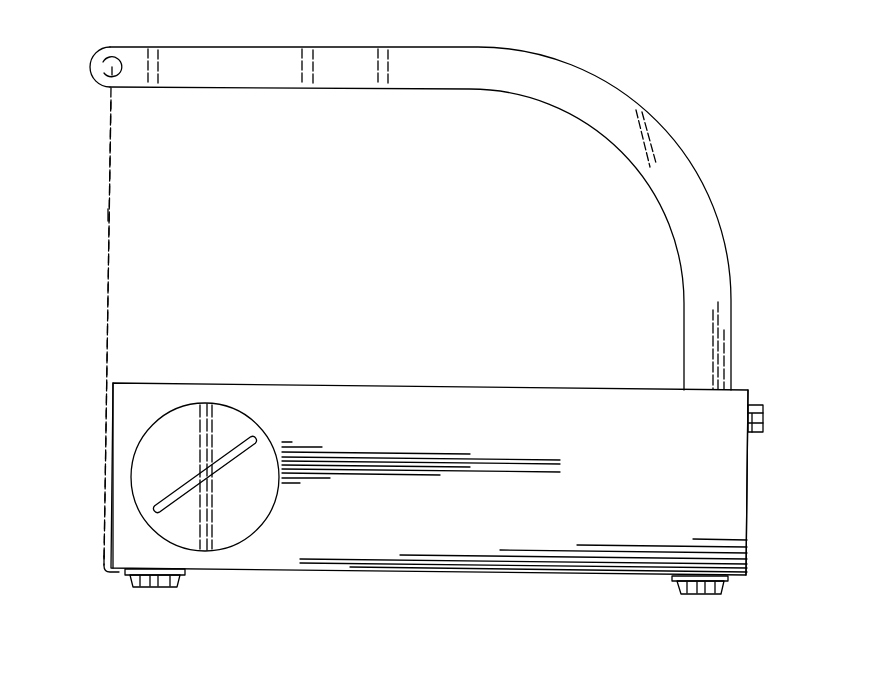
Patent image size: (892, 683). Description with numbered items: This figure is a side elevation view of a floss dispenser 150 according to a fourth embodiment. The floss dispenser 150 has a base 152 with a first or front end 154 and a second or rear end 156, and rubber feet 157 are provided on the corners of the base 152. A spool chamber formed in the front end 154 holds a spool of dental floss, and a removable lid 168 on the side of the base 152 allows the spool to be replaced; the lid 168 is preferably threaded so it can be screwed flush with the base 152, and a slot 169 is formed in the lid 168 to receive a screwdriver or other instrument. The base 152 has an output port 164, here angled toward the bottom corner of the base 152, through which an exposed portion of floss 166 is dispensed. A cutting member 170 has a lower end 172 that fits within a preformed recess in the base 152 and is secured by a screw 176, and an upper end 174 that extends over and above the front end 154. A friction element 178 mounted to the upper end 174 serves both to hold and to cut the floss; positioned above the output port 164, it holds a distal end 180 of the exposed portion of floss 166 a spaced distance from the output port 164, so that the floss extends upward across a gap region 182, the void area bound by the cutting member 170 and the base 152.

The floss dispenser 150 is at (736, 189).
The base 152 is at (442, 540).
The first or front end 154 is at (135, 407).
The second or rear end 156 is at (730, 496).
The rubber feet 157 is at (148, 590).
The output port 164 is at (118, 575).
The exposed portion of floss 166 is at (108, 215).
The removable lid 168 is at (224, 430).
The slot 169 is at (223, 472).
The cutting member 170 is at (605, 103).
The lower end 172 is at (707, 368).
The upper end 174 is at (132, 62).
The screw 176 is at (767, 415).
The friction element 178 is at (113, 67).
The distal end 180 is at (112, 104).
The gap region 182 is at (208, 197).